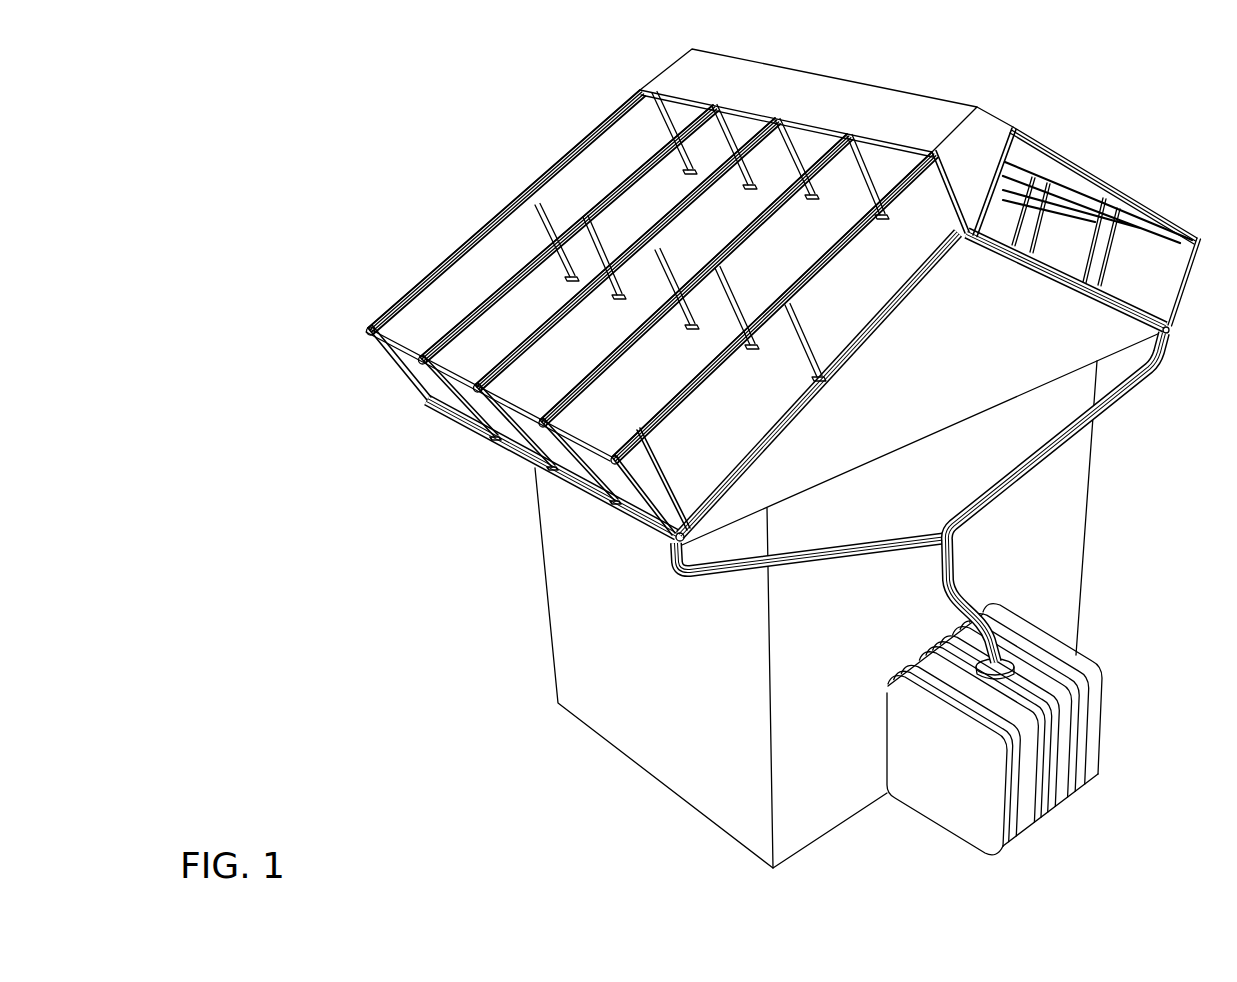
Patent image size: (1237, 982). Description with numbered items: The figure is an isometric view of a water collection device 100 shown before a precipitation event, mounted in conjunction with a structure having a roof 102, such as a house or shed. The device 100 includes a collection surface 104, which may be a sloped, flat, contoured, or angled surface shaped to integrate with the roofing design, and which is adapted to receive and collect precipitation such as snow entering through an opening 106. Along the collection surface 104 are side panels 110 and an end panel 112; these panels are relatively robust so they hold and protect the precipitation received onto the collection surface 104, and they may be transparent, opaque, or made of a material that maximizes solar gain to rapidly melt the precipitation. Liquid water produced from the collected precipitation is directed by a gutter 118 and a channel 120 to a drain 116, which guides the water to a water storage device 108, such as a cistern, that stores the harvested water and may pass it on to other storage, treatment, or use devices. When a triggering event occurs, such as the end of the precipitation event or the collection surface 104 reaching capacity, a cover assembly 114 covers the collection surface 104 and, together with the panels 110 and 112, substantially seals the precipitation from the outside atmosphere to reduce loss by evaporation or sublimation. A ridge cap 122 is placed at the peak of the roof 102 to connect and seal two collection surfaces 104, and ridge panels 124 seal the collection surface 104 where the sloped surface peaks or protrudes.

The water collection device 100 is at (714, 458).
The roof 102 is at (1028, 358).
The collection surface 104 is at (750, 392).
The opening 106 is at (560, 192).
The water storage device 108 is at (927, 767).
The side panels 110 is at (455, 238).
The end panel 112 is at (505, 417).
The cover assembly 114 is at (605, 418).
The drain 116 is at (1058, 448).
The gutter 118 is at (427, 400).
The channel 120 is at (867, 347).
The ridge cap 122 is at (833, 107).
The ridge panels 124 is at (970, 178).